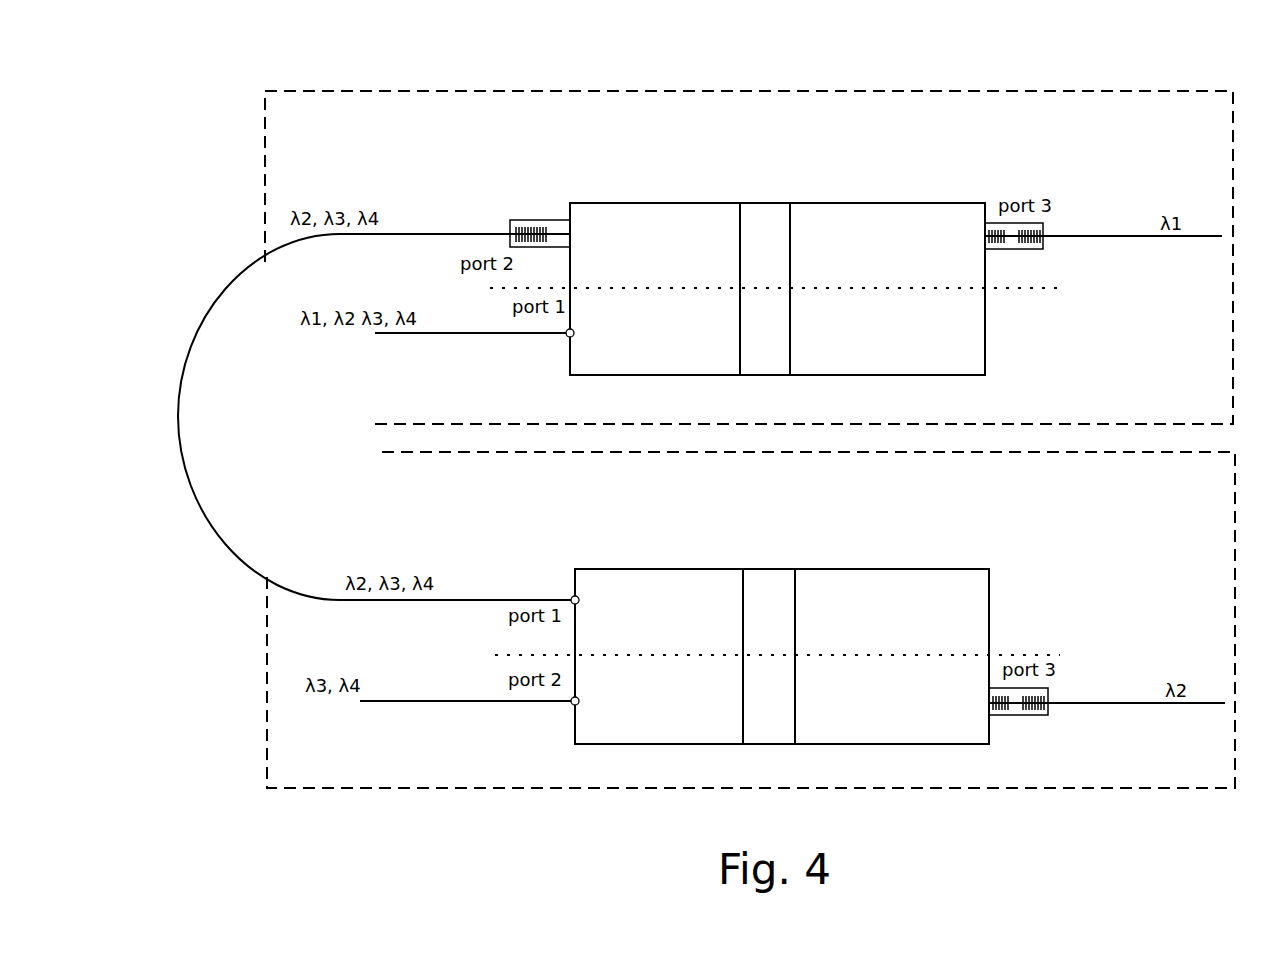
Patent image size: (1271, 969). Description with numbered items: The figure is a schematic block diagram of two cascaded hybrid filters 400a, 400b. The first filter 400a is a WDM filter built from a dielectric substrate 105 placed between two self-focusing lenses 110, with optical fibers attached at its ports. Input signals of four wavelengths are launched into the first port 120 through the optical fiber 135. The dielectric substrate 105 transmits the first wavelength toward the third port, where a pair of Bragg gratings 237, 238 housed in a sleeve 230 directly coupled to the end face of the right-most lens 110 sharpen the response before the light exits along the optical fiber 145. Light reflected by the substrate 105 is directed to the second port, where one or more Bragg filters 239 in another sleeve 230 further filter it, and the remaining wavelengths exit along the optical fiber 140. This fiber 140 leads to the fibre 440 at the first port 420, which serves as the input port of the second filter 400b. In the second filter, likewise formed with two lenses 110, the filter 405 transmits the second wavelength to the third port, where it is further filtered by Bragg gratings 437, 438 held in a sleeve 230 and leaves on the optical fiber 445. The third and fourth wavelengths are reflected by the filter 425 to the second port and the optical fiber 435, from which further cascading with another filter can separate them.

The first cascaded filter 400a is at (860, 91).
The second cascaded filter 400b is at (1115, 788).
The SELFOC lens 110 is at (650, 203).
The dielectric substrate 105 is at (768, 203).
The filter 405 is at (770, 569).
The port 1 120 is at (565, 336).
The optical fiber 135 is at (512, 333).
The optical fiber 140 is at (445, 234).
The optical fiber 145 is at (1212, 236).
The sleeve 230 is at (553, 220).
The Bragg filter 239 is at (518, 220).
The Bragg grating 237 is at (991, 243).
The Bragg grating 238 is at (1024, 243).
The port 1 420 is at (568, 598).
The filter 425 is at (570, 706).
The optical fiber 435 is at (492, 701).
The fibre 440 is at (520, 600).
The optical fiber 445 is at (1212, 703).
The Bragg grating 437 is at (995, 710).
The Bragg grating 438 is at (1029, 710).